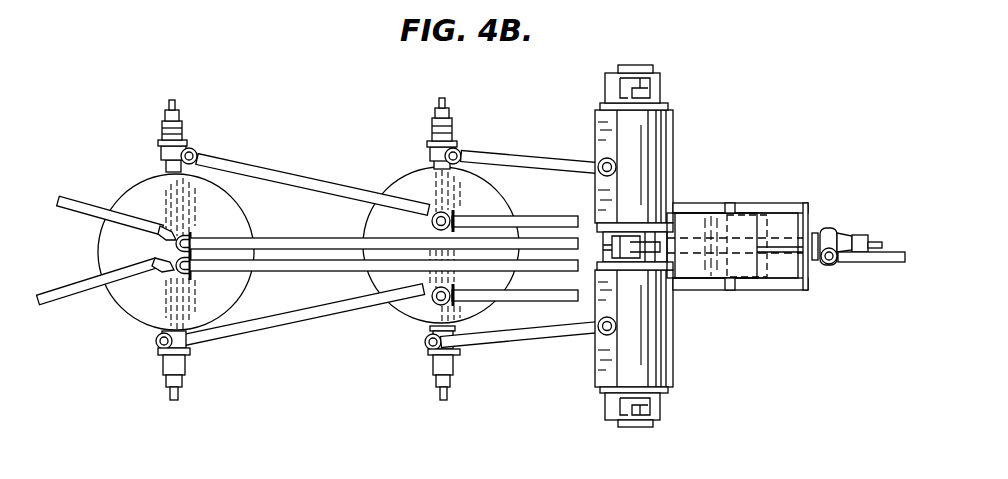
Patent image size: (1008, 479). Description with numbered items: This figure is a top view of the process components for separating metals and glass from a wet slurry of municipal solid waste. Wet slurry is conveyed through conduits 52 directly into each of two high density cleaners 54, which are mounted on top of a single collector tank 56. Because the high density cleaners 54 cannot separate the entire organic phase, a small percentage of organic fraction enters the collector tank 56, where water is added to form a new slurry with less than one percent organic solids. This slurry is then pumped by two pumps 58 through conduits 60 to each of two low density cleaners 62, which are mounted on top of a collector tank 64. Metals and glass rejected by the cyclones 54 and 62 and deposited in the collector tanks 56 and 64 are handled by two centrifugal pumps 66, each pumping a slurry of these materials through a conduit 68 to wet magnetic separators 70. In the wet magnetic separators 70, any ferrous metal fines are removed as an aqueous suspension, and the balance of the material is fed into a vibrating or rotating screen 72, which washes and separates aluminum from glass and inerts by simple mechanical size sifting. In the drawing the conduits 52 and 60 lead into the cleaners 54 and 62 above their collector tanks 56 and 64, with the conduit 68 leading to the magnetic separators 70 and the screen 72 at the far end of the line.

The conduits 52 is at (96, 215).
The high density cleaners 54 is at (176, 236).
The collector tank 56 is at (148, 325).
The pumps 58 is at (174, 127).
The conduits 60 is at (283, 172).
The low density cleaners 62 is at (441, 212).
The collector tank 64 is at (403, 307).
The centrifugal pumps 66 is at (446, 123).
The conduit 68 is at (525, 158).
The wet magnetic separators 70 is at (662, 157).
The screen 72 is at (740, 230).